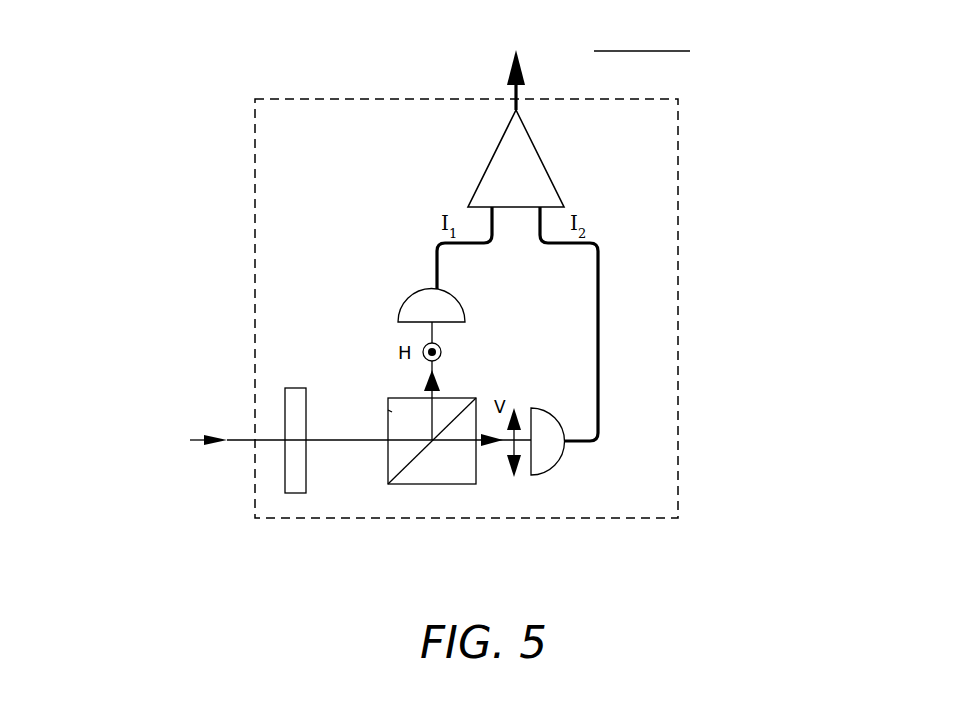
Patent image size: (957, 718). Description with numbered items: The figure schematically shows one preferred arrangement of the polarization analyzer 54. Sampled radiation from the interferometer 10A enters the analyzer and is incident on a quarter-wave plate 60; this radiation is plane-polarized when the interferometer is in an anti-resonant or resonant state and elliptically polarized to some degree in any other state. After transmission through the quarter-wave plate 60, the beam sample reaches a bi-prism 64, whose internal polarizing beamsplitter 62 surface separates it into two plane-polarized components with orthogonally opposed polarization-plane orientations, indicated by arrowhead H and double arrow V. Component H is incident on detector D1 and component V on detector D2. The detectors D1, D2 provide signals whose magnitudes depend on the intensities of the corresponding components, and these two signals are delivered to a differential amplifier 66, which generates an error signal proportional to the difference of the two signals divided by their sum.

The polarization analyzer 54 is at (342, 524).
The quarter-wave plate 60 is at (285, 481).
The polarizing beamsplitter surface 62 is at (417, 462).
The bi-prism 64 is at (376, 406).
The differential amplifier 66 is at (540, 168).
The detector D1 is at (403, 302).
The detector D2 is at (550, 457).
The interferometer 10A is at (138, 441).